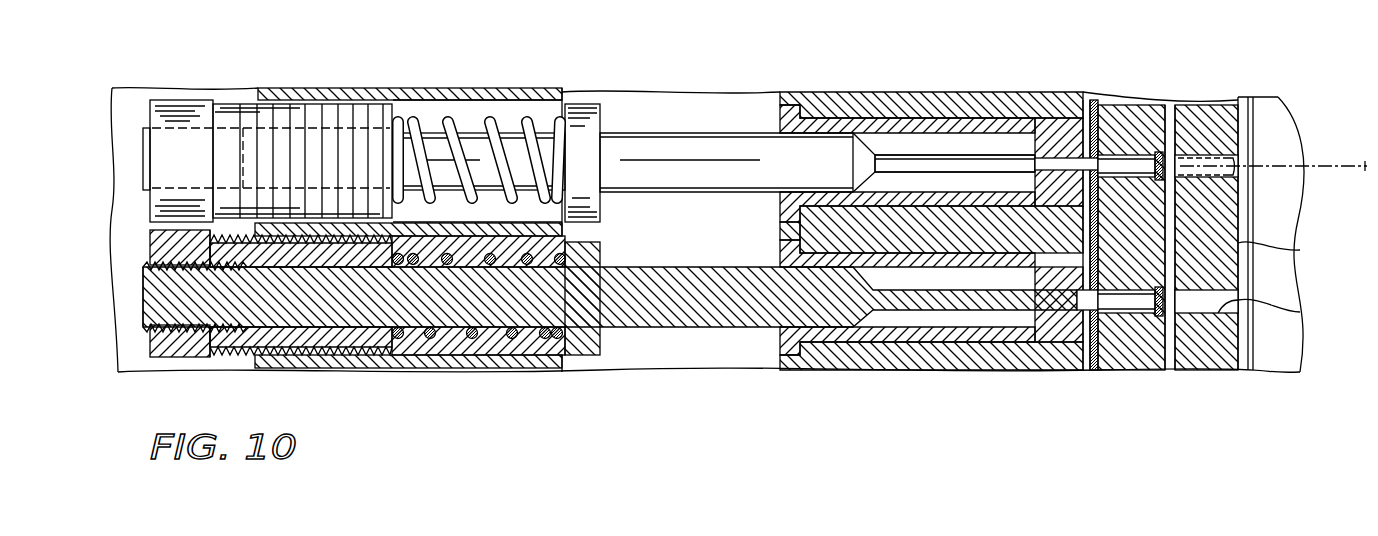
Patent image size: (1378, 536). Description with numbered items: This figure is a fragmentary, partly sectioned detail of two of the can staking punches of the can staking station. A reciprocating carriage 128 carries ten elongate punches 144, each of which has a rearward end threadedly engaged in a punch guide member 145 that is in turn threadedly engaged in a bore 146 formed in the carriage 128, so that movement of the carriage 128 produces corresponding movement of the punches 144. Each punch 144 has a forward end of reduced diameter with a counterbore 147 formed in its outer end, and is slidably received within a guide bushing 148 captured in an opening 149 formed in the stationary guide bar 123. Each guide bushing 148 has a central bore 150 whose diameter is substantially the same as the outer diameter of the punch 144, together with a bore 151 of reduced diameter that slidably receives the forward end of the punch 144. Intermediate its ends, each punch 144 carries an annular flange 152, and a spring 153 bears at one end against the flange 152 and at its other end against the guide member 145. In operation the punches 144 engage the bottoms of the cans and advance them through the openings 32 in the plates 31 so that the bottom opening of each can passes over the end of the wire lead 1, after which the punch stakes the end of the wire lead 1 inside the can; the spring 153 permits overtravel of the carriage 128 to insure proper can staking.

The wire lead 1 is at (1317, 160).
The plate 31 is at (1300, 250).
The cylindrical opening 32 is at (1300, 312).
The stationary guide bar 123 is at (815, 372).
The reciprocating carriage 128 is at (346, 350).
The punch 144 is at (683, 133).
The punch guide member 145 is at (338, 100).
The bore 146 is at (504, 100).
The counterbore 147 is at (1078, 297).
The guide bushing 148 is at (1050, 125).
The opening 149 is at (935, 118).
The central bore 150 is at (892, 126).
The reduced-diameter bore 151 is at (1020, 160).
The annular flange 152 is at (588, 104).
The spring 153 is at (447, 118).